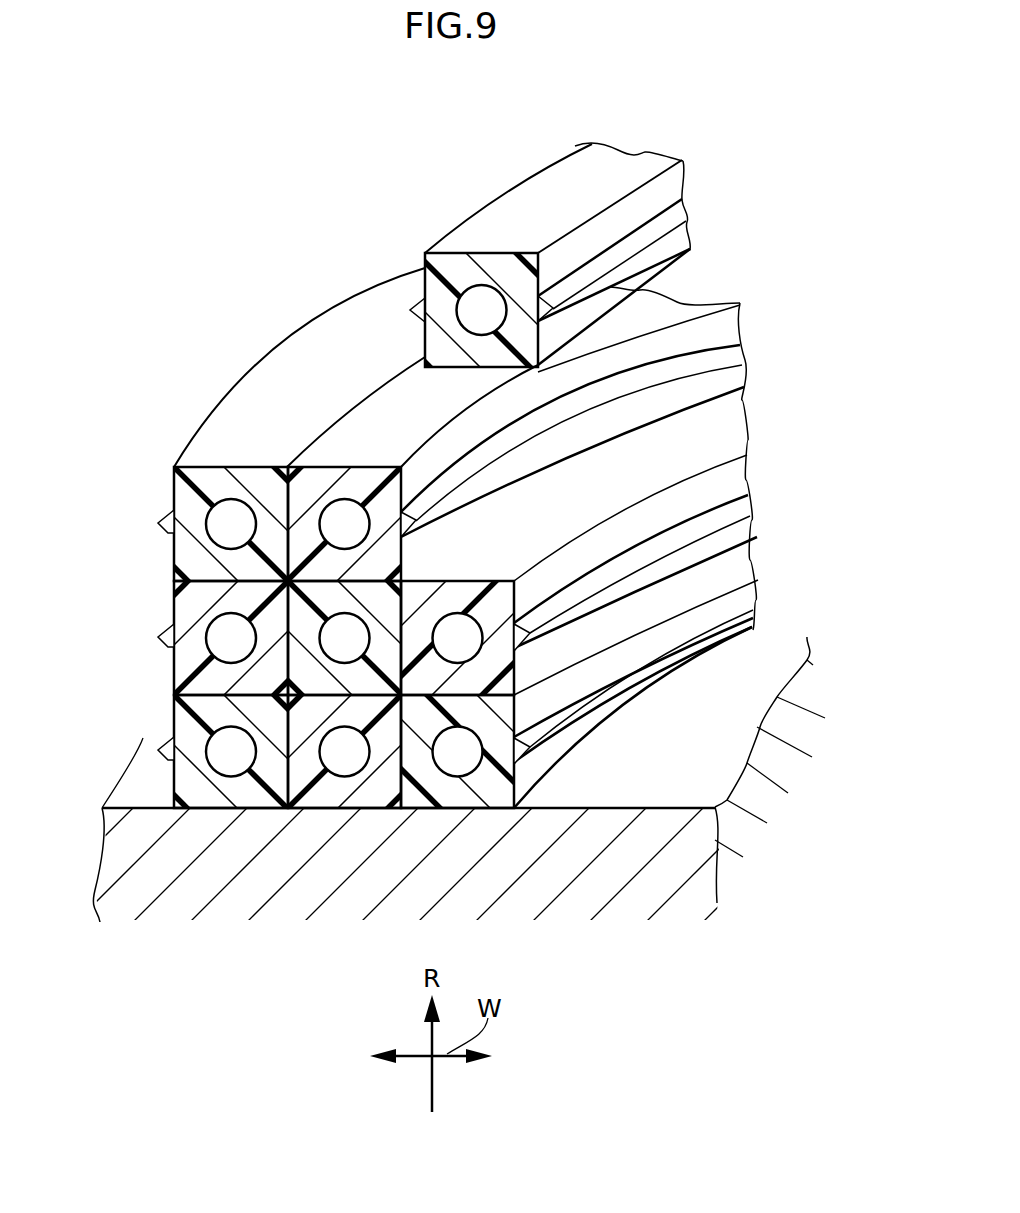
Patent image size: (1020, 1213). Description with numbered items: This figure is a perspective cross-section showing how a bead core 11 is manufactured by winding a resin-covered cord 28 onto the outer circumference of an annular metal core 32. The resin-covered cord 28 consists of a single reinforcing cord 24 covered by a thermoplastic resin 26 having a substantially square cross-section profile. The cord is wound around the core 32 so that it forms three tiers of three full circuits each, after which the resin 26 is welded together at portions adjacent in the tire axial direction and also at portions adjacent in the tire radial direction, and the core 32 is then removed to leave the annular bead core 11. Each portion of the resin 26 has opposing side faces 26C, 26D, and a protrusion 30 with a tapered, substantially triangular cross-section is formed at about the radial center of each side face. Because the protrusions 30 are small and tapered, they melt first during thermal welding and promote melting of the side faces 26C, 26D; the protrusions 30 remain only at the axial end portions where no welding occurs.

The bead core 11 is at (308, 238).
The reinforcing cord 24 is at (482, 288).
The resin 26 is at (443, 230).
The side face 26C is at (481, 318).
The side face 26D is at (557, 258).
The resin-covered cord 28 is at (472, 183).
The protrusion 30 is at (412, 310).
The core 32 is at (680, 790).